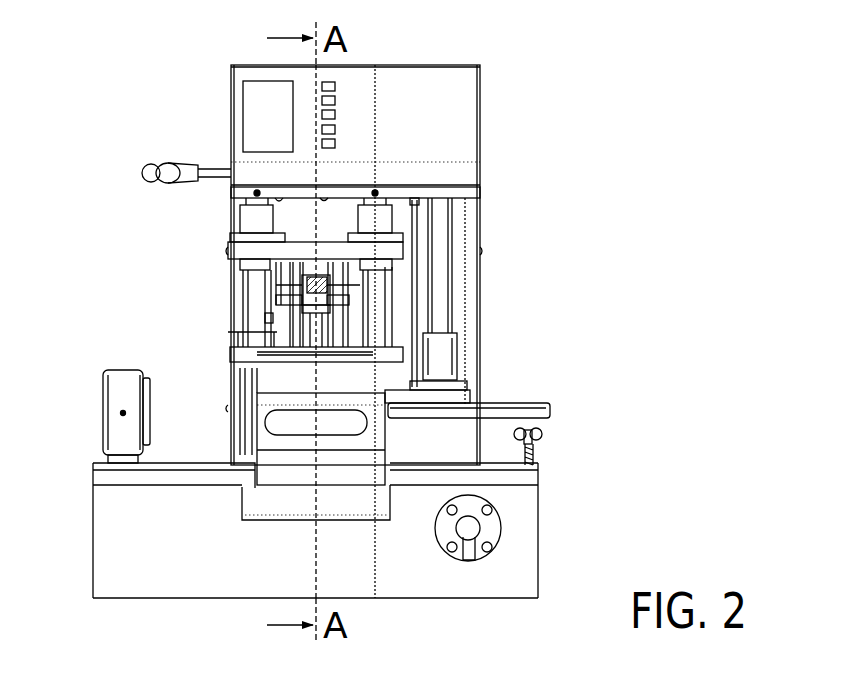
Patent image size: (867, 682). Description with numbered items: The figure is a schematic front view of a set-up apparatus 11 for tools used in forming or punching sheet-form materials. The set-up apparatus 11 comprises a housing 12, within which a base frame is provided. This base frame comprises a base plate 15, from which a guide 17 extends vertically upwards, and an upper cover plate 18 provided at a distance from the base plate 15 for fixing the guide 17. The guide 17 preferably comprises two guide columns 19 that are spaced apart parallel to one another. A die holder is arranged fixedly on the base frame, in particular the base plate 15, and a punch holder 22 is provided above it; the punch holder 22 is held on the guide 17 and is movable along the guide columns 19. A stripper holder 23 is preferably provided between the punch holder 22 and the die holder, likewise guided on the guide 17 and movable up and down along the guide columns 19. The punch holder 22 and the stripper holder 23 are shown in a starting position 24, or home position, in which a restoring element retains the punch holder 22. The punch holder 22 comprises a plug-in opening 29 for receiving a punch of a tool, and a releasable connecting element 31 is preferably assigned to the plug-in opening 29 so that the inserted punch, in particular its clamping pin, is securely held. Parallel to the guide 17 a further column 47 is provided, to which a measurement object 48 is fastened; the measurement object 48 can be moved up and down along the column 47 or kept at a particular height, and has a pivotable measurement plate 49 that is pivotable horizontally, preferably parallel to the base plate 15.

The set-up apparatus 11 is at (600, 90).
The housing 12 is at (455, 86).
The base plate 15 is at (523, 478).
The guide 17 is at (240, 299).
The upper cover plate 18 is at (465, 192).
The guide columns 19 is at (373, 317).
The punch holder 22 is at (210, 237).
The stripper holder 23 is at (215, 360).
The starting position 24 is at (162, 260).
The plug-in opening 29 is at (358, 294).
The releasable connecting element 31 is at (322, 300).
The further column 47 is at (445, 228).
The measurement object 48 is at (567, 417).
The pivotable measurement plate 49 is at (530, 415).